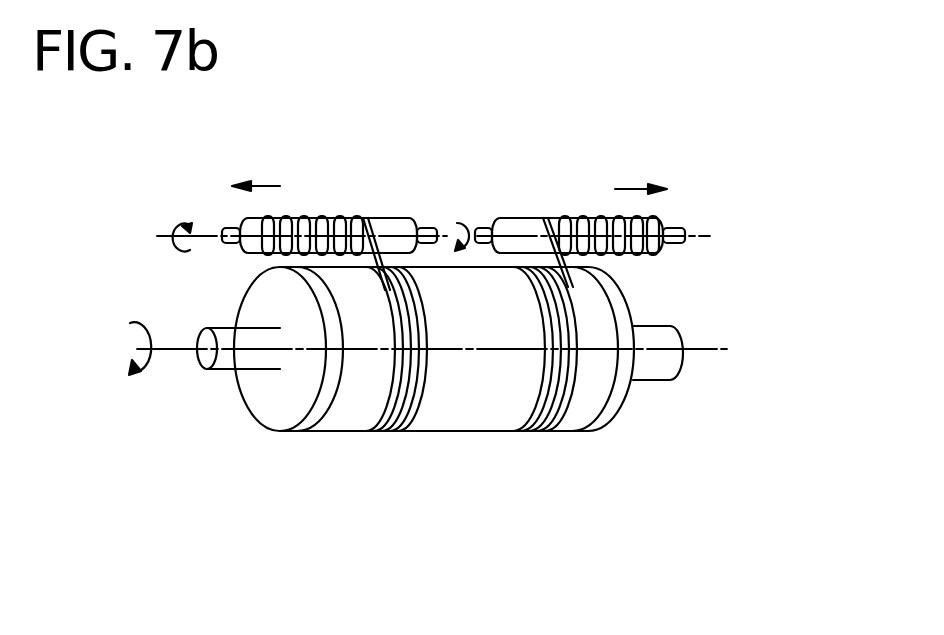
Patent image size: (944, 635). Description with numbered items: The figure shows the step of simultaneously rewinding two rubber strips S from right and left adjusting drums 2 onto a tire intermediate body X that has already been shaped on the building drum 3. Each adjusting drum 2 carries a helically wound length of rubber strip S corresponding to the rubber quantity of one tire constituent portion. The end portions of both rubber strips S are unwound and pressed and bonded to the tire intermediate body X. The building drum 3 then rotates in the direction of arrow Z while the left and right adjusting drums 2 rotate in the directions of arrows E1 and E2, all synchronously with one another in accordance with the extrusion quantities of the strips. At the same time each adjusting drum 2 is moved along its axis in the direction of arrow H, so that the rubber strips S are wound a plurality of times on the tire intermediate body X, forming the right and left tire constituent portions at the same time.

The tire intermediate body X is at (457, 423).
The building drum 3 is at (623, 407).
The adjusting drum 2 is at (405, 218).
The rubber strip S is at (348, 218).
The arrow indicating moving direction of adjusting drums H is at (449, 170).
The arrow indicating rotation direction of left adjusting drum E1 is at (176, 217).
The arrow indicating rotation direction of right adjusting drum E2 is at (462, 220).
The arrow indicating rotation direction of building drum Z is at (126, 348).